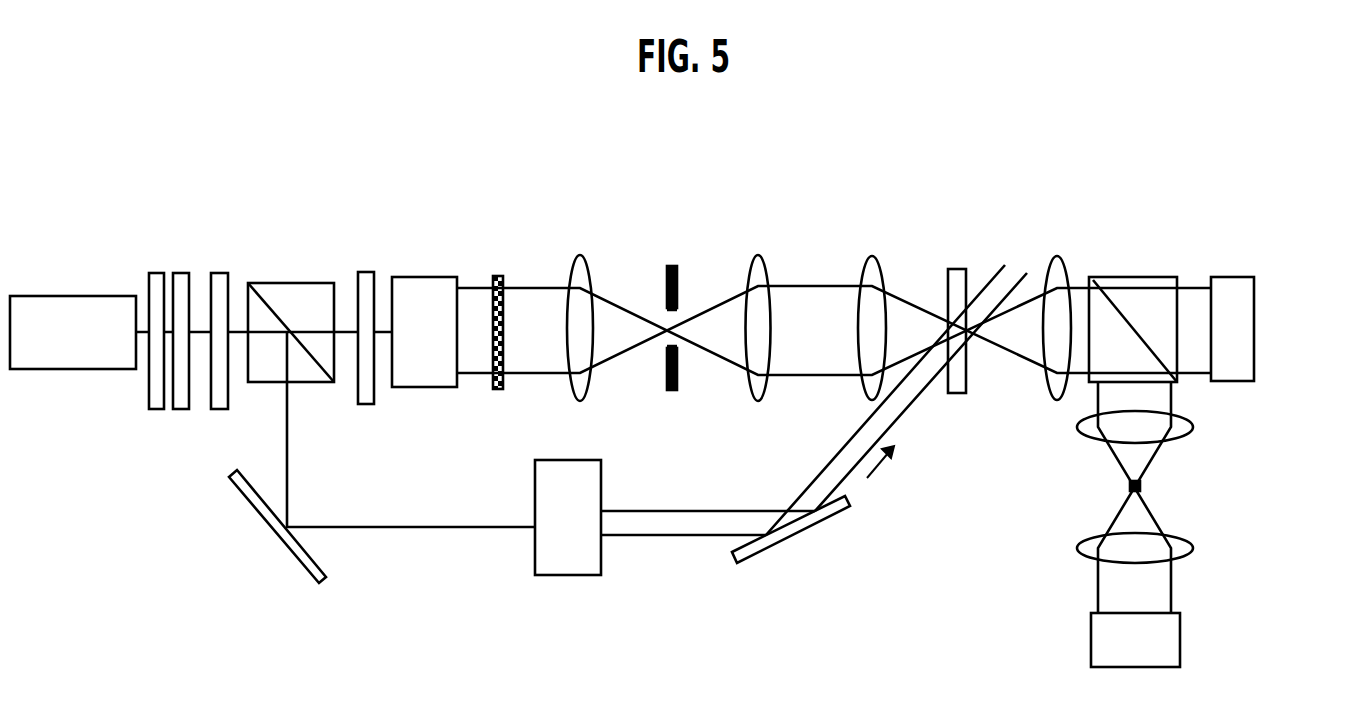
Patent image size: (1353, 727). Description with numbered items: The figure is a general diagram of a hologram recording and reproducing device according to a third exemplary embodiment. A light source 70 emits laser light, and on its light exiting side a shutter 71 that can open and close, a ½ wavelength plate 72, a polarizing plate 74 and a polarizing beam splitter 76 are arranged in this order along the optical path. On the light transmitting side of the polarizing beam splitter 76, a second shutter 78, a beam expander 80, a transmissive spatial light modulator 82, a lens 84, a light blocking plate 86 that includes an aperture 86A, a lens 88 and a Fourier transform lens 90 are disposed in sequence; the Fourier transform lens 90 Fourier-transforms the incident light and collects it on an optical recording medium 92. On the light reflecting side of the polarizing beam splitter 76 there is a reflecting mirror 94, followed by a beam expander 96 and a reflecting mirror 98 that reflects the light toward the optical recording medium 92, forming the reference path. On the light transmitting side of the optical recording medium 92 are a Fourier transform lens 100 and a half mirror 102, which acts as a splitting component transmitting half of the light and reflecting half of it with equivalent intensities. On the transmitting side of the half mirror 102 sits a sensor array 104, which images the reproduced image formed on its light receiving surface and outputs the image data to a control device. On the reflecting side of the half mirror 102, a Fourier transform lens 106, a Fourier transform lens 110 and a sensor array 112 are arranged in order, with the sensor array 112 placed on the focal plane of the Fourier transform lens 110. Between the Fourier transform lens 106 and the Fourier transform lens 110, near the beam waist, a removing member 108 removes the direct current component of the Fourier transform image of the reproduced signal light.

The light source 70 is at (85, 305).
The shutter 71 is at (153, 275).
The ½ wavelength plate 72 is at (181, 275).
The polarizing plate 74 is at (220, 275).
The polarizing beam splitter 76 is at (298, 292).
The shutter 78 is at (364, 278).
The beam expander 80 is at (436, 285).
The transmissive spatial light modulator 82 is at (497, 274).
The lens 84 is at (580, 268).
The light blocking plate 86 is at (677, 275).
The aperture 86A is at (675, 313).
The lens 88 is at (758, 270).
The Fourier transform lens 90 is at (871, 272).
The optical recording medium 92 is at (956, 278).
The reflecting mirror 94 is at (257, 507).
The beam expander 96 is at (563, 565).
The reflecting mirror 98 is at (805, 536).
The Fourier transform lens 100 is at (1097, 248).
The half mirror 102 is at (1143, 279).
The sensor array 104 is at (1245, 303).
The Fourier transform lens 106 is at (1180, 425).
The removing member 108 is at (1142, 486).
The Fourier transform lens 110 is at (1190, 546).
The sensor array 112 is at (1172, 638).